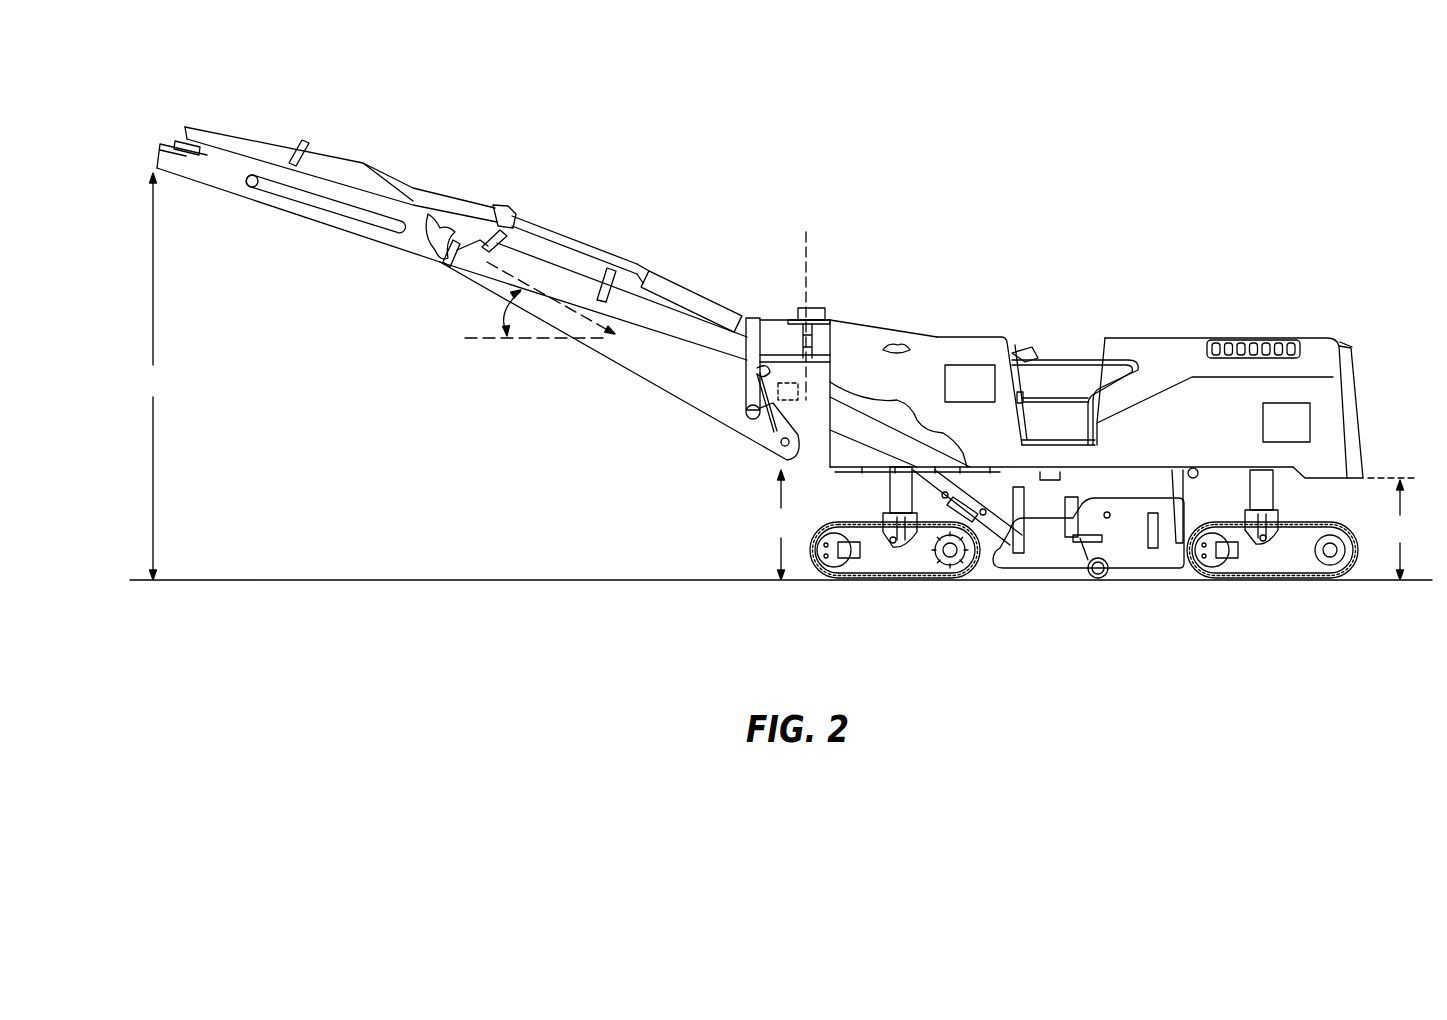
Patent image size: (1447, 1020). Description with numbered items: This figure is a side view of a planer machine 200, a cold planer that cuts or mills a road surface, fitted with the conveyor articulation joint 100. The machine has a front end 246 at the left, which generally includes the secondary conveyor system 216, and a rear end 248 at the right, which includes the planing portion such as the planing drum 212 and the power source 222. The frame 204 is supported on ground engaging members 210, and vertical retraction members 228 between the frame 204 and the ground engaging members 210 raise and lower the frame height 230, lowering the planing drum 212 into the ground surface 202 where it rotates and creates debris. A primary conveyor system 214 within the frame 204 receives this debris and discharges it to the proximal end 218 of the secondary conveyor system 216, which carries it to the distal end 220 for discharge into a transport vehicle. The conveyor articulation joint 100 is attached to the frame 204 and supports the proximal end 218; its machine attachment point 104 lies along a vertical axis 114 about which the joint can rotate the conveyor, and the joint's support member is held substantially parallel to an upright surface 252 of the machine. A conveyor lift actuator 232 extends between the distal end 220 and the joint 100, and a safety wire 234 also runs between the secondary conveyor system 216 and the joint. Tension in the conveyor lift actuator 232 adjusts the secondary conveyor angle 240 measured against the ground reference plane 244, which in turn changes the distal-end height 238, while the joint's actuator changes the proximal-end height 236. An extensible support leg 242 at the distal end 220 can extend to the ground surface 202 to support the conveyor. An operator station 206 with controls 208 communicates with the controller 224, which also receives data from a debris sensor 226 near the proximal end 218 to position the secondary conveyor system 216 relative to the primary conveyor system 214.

The conveyor articulation joint 100 is at (752, 318).
The machine attachment point 104 is at (833, 292).
The vertical axis 114 is at (808, 240).
The planer machine 200 is at (335, 86).
The ground surface 202 is at (1161, 583).
The frame 204 is at (1360, 413).
The operator station 206 is at (1095, 314).
The controls 208 is at (1020, 345).
The ground engaging members 210 is at (891, 582).
The planing drum 212 is at (1097, 583).
The primary conveyor system 214 is at (957, 582).
The secondary conveyor system 216 is at (642, 370).
The proximal end 218 is at (734, 460).
The distal end 220 is at (216, 210).
The power source 222 is at (1303, 434).
The controller 224 is at (986, 396).
The debris sensor 226 is at (833, 382).
The vertical retraction members 228 is at (888, 497).
The frame height 230 is at (1392, 529).
The conveyor lift actuator 232 is at (617, 263).
The safety wire 234 is at (653, 272).
The proximal-end height 236 is at (786, 525).
The distal-end height 238 is at (156, 376).
The secondary conveyor angle 240 is at (500, 306).
The extensible support leg 242 is at (330, 185).
The ground reference plane 244 is at (480, 341).
The front end 246 is at (138, 165).
The rear end 248 is at (1391, 340).
The upright surface 252 is at (830, 468).